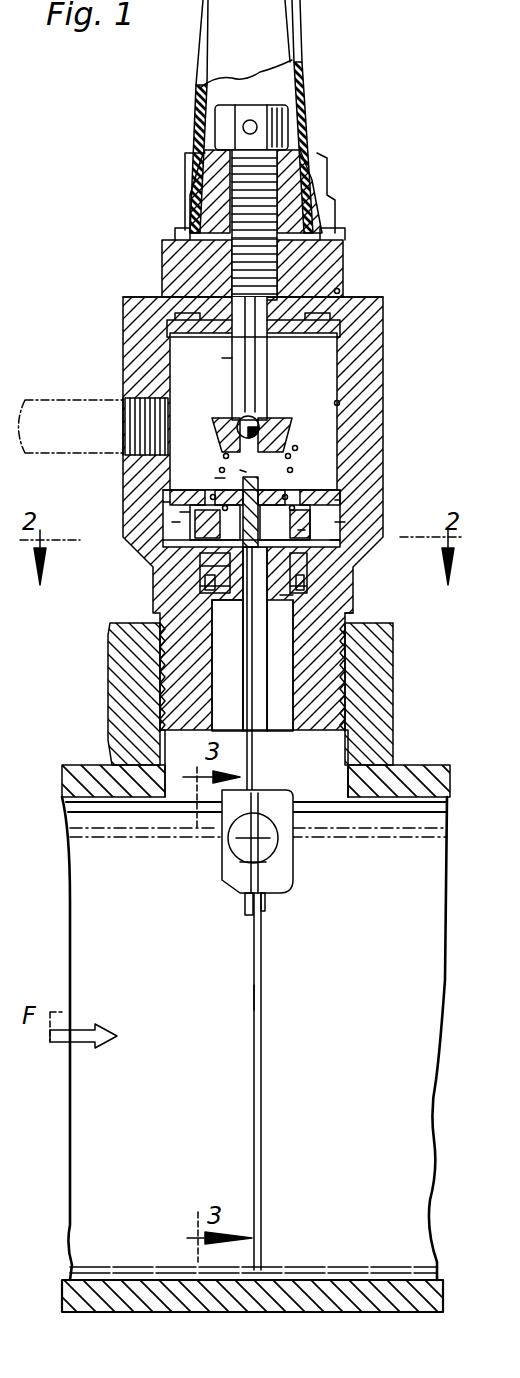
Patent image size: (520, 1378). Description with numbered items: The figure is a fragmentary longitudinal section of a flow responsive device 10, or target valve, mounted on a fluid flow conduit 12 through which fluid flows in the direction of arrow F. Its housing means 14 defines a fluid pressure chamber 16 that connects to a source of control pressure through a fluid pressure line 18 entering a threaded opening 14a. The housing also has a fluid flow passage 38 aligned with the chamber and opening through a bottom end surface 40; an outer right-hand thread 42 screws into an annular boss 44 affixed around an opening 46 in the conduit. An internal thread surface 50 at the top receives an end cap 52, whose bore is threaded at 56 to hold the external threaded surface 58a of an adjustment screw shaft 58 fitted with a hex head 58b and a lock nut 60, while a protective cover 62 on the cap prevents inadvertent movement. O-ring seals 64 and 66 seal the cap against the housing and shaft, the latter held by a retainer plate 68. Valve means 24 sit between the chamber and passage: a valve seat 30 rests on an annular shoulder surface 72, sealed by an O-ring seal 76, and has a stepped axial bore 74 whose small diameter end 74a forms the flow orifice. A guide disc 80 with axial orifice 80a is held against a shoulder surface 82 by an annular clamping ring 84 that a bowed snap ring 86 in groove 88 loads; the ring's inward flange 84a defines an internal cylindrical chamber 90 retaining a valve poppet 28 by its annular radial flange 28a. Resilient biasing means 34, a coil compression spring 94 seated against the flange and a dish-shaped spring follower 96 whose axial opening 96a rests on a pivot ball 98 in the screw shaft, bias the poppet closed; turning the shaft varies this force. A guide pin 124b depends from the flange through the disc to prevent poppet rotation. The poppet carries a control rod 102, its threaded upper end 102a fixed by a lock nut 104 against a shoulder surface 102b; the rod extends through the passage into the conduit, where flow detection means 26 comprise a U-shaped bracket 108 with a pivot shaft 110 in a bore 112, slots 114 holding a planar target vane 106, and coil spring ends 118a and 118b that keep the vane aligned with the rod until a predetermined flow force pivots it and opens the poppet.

The flow responsive device 10 is at (128, 150).
The fluid flow conduit 12 is at (433, 762).
The housing means 14 is at (384, 381).
The threaded opening 14a is at (123, 405).
The fluid pressure chamber 16 is at (345, 404).
The fluid pressure line 18 is at (105, 399).
The valve means 24 is at (325, 481).
The flow detection means 26 is at (272, 1008).
The valve poppet 28 is at (185, 513).
The annular radial flange 28a is at (178, 523).
The valve seat 30 is at (354, 613).
The resilient biasing means 34 is at (318, 435).
The fluid flow passage 38 is at (152, 703).
The bottom end surface 40 is at (314, 738).
The outer circumferential right-hand thread 42 is at (388, 669).
The annular boss 44 is at (370, 703).
The opening 46 is at (340, 795).
The internal thread surface 50 is at (385, 303).
The end cap 52 is at (340, 272).
The threaded portion of axial bore 56 is at (330, 240).
The adjustment screw shaft 58 is at (291, 357).
The external threaded surface 58a is at (292, 188).
The hex head 58b is at (292, 117).
The lock nut 60 is at (323, 152).
The protective cover 62 is at (304, 30).
The O-ring seal 64 is at (345, 293).
The O-ring seal 66 is at (205, 336).
The retainer plate 68 is at (224, 360).
The annular shoulder surface 72 is at (165, 630).
The stepped axial bore 74 is at (214, 640).
The small diameter end 74a is at (205, 567).
The O-ring seal 76 is at (200, 587).
The guide disc 80 is at (312, 566).
The axial orifice 80a is at (298, 531).
The annular shoulder surface 82 is at (200, 558).
The annular clamping ring 84 is at (336, 540).
The radially inwardly extending flange 84a is at (336, 503).
The bowed snap ring 86 is at (165, 491).
The annular groove 88 is at (165, 503).
The internal cylindrical chamber 90 is at (346, 527).
The coil compression spring 94 is at (216, 443).
The spring follower 96 is at (290, 415).
The axial opening 96a is at (300, 451).
The pivot ball 98 is at (238, 421).
The control rod 102 is at (248, 666).
The threaded upper end 102a is at (232, 468).
The annular shoulder surface 102b is at (282, 598).
The lock nut 104 is at (215, 479).
The target vane 106 is at (263, 1054).
The U-shaped bracket 108 is at (293, 883).
The pivot shaft 110 is at (272, 851).
The bore 112 is at (240, 866).
The diametral slot 114 is at (236, 843).
The coil spring end 118a is at (243, 906).
The coil spring end 118b is at (268, 907).
The guide pin 124b is at (306, 588).